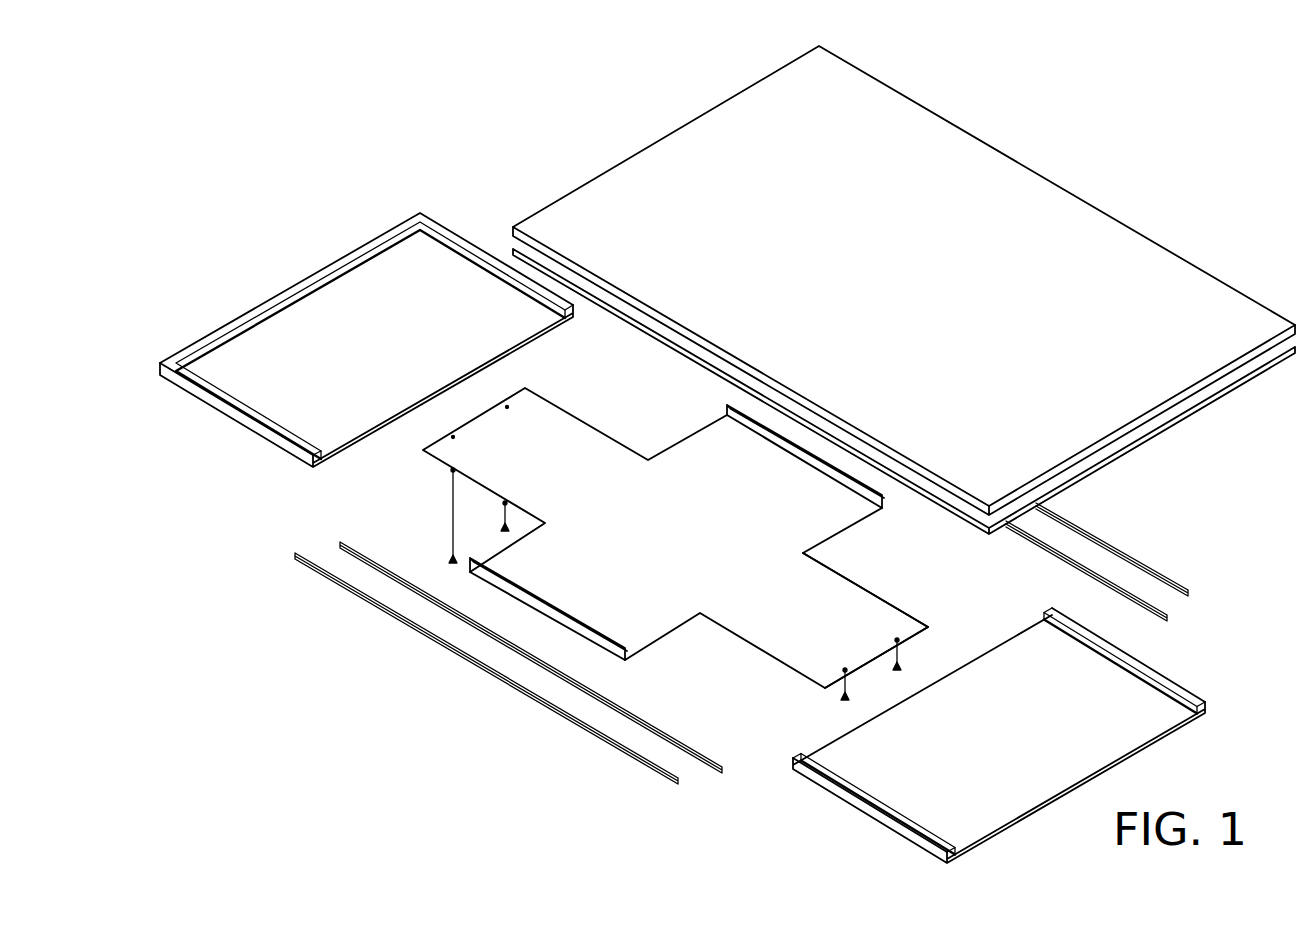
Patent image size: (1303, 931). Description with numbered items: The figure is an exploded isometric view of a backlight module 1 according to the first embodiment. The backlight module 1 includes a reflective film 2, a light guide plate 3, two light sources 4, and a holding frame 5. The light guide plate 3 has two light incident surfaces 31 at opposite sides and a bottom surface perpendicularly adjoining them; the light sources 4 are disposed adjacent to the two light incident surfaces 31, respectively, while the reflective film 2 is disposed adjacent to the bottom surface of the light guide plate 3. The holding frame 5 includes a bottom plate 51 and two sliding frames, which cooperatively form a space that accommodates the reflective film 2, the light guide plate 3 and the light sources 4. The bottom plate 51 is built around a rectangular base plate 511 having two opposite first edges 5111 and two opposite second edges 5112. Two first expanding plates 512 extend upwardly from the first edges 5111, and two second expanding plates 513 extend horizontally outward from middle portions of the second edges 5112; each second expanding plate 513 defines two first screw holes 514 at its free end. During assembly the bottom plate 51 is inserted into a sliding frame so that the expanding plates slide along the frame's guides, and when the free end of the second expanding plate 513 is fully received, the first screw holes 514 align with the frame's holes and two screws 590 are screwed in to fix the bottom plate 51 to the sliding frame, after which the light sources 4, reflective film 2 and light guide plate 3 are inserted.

The backlight module 1 is at (646, 96).
The reflective film 2 is at (1260, 360).
The light guide plate 3 is at (897, 280).
The light incident surfaces 31 is at (514, 228).
The light sources 4 is at (728, 764).
The holding frame 5 is at (163, 618).
The bottom plate 51 is at (676, 560).
The base plate 511 is at (610, 517).
The first edges 5111 is at (757, 438).
The second edges 5112 is at (672, 635).
The first expanding plates 512 is at (728, 413).
The second expanding plates 513 is at (870, 613).
The first screw holes 514 is at (899, 640).
The screws 590 is at (452, 556).